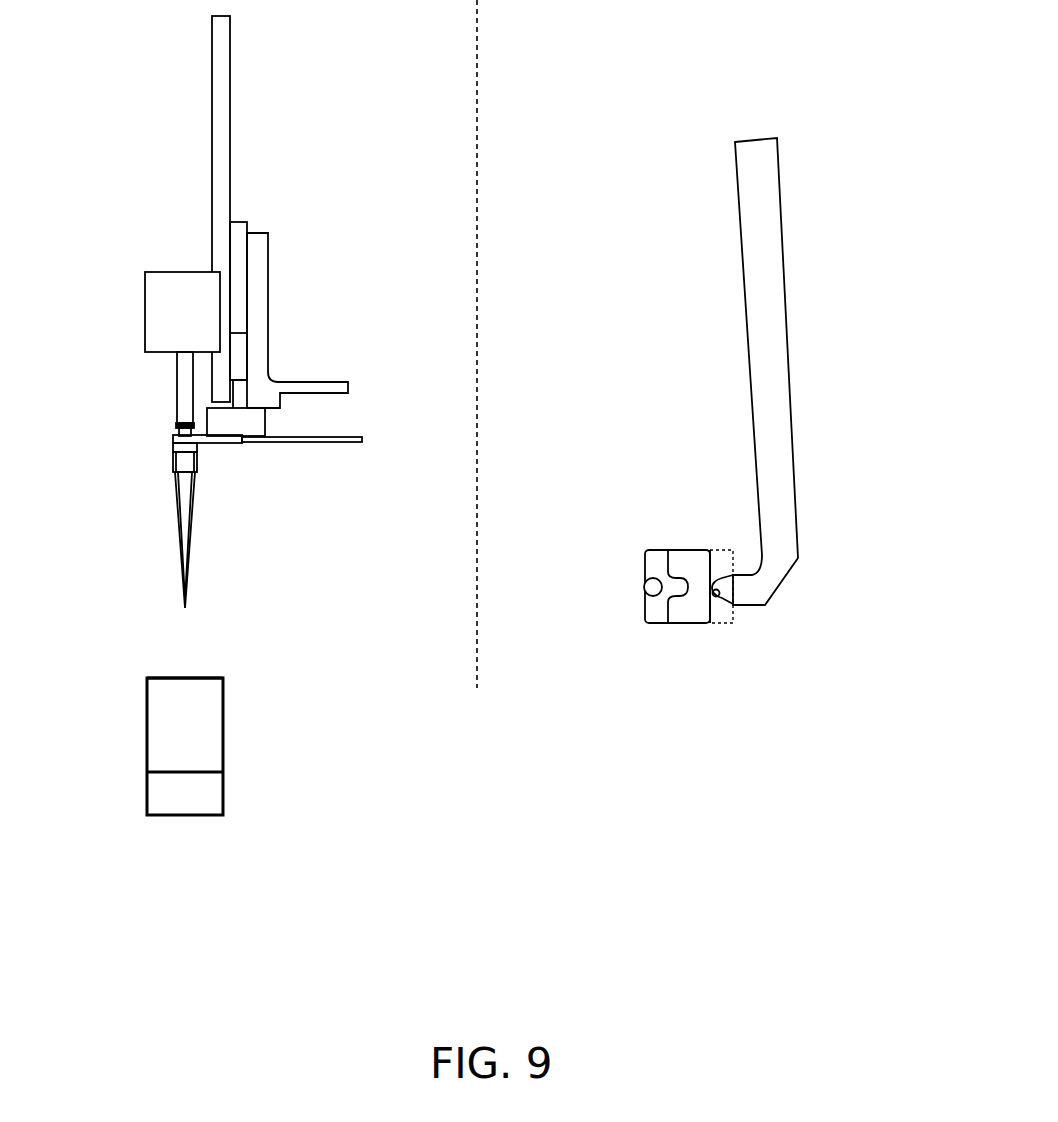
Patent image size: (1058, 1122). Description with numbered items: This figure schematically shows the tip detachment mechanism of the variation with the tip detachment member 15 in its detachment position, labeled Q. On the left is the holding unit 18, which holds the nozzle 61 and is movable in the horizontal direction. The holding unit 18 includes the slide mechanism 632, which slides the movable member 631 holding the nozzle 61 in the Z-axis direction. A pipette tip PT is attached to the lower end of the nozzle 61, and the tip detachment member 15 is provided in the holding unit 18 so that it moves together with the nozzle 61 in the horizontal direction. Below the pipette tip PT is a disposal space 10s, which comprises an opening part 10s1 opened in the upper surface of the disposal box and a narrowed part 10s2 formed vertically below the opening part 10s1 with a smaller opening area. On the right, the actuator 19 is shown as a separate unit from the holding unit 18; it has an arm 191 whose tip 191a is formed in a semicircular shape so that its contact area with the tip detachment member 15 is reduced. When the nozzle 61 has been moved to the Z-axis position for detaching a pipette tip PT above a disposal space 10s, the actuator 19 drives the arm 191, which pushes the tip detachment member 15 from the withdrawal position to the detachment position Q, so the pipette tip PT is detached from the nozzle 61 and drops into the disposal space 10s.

The holding unit 18 is at (196, 226).
The slide mechanism 632 is at (226, 287).
The movable member 631 is at (143, 310).
The nozzle 61 is at (173, 385).
The tip detachment member 15 is at (218, 443).
The arm 191 is at (597, 371).
The actuator 19 is at (597, 371).
The tip of the arm 191a is at (698, 585).
The pipette tip PT is at (173, 513).
The disposal space 10s is at (218, 718).
The opening part 10s1 is at (192, 675).
The narrowed part 10s2 is at (183, 777).